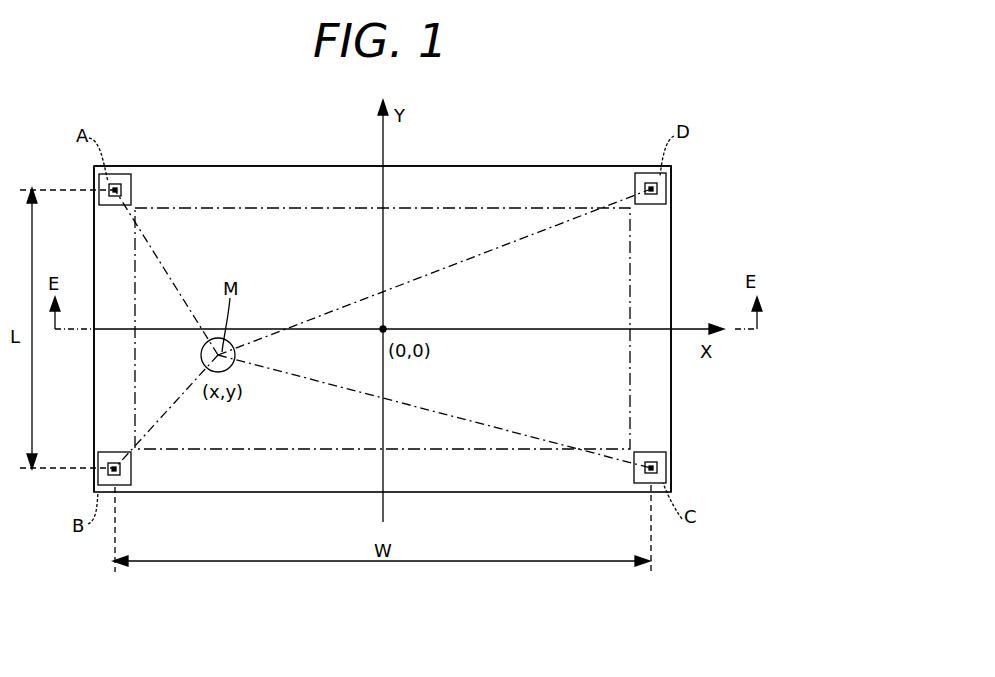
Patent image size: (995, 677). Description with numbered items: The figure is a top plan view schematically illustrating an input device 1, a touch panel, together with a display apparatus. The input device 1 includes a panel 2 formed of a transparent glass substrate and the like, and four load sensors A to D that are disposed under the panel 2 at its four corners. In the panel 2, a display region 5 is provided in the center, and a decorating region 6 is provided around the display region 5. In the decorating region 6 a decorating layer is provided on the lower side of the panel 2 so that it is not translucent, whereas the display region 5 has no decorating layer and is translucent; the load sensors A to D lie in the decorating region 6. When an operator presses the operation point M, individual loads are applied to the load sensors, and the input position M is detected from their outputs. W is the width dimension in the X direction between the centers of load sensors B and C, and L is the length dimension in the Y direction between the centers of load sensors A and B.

The input device 1 is at (606, 118).
The panel 2 is at (518, 180).
The display region 5 is at (285, 220).
The decorating region 6 is at (230, 183).